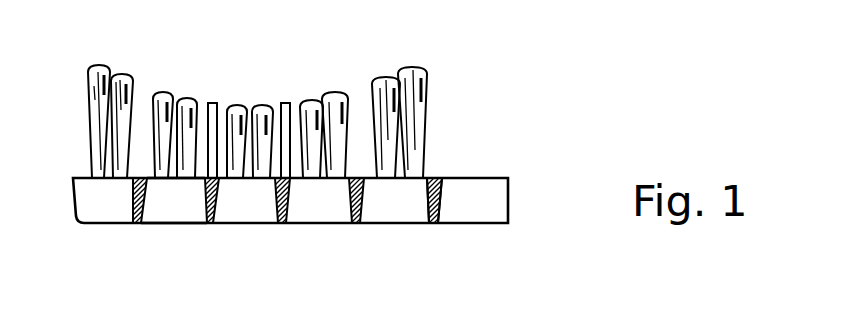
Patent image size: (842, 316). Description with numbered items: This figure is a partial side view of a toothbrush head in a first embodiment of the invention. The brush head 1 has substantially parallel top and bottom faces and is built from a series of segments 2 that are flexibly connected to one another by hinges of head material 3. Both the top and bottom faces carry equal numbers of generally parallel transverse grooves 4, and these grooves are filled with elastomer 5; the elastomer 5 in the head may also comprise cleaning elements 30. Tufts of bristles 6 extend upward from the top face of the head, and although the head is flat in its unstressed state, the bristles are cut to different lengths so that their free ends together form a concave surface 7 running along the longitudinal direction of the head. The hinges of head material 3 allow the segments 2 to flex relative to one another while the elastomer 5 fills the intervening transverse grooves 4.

The brush head 1 is at (325, 159).
The segments 2 is at (175, 202).
The hinges of head material 3 is at (213, 214).
The transverse grooves 4 is at (441, 170).
The elastomer 5 is at (432, 225).
The tufts of bristles 6 is at (445, 81).
The concave surface 7 is at (508, 199).
The cleaning elements 30 is at (214, 106).